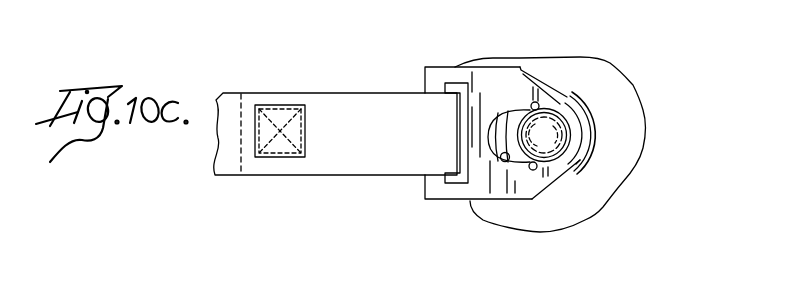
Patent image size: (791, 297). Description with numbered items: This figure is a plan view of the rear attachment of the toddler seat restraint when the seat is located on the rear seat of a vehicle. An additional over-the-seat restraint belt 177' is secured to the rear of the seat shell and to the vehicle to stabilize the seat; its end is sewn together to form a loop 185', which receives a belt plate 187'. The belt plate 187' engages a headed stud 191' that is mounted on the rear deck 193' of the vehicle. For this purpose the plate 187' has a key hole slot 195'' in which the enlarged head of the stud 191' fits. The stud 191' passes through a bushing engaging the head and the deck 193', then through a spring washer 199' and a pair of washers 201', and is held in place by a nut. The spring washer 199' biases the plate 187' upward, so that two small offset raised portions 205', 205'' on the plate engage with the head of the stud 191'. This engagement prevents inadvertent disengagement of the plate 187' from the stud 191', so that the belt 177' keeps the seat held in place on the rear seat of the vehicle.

The restraint strap or belt 177' is at (256, 101).
The loop 185' is at (335, 110).
The belt plate 187' is at (478, 108).
The raised portions 205' is at (524, 63).
The spring washer 199' is at (588, 95).
The rear deck 193' is at (571, 124).
The washers 201' is at (604, 128).
The headed stud 191' is at (629, 182).
The key hole slot 195'' is at (456, 198).
The raised portions 205'' is at (546, 197).